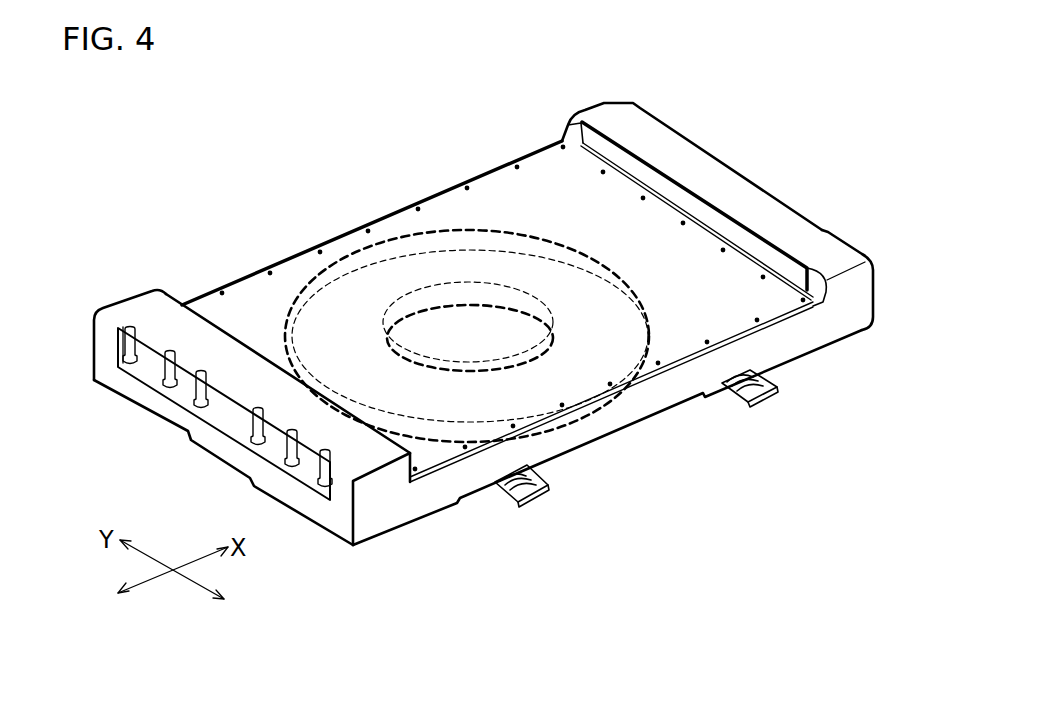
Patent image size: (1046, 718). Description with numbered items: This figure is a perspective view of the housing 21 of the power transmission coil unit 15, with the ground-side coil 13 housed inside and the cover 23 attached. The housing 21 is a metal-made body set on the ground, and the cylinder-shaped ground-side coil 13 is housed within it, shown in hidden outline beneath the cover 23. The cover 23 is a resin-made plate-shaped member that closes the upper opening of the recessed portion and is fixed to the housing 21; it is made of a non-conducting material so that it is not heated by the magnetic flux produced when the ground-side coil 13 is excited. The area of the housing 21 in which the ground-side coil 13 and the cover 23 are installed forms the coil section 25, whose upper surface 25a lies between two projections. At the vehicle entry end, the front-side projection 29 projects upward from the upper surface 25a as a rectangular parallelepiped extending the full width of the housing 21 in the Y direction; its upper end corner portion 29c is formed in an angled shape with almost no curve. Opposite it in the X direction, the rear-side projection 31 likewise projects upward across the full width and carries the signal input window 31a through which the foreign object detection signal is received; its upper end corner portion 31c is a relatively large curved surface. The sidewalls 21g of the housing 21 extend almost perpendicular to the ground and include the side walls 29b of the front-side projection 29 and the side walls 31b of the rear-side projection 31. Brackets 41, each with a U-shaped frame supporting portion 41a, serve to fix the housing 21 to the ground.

The power transmission coil unit 15 is at (547, 100).
The housing 21 is at (625, 100).
The sidewalls 21g is at (608, 423).
The coil section 25 is at (512, 92).
The cover 23 is at (488, 195).
The upper surface 25a is at (253, 300).
The ground-side coil 13 is at (397, 238).
The front-side projection 29 is at (142, 314).
The side walls 29b is at (380, 485).
The upper end corner portion 29c is at (108, 324).
The rear-side projection 31 is at (667, 133).
The signal input window 31a is at (747, 243).
The side walls 31b is at (852, 288).
The upper end corner portion 31c is at (828, 230).
The bracket 41 is at (671, 493).
The frame supporting portion 41a is at (540, 505).